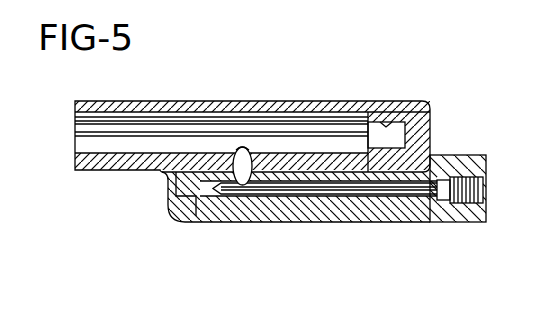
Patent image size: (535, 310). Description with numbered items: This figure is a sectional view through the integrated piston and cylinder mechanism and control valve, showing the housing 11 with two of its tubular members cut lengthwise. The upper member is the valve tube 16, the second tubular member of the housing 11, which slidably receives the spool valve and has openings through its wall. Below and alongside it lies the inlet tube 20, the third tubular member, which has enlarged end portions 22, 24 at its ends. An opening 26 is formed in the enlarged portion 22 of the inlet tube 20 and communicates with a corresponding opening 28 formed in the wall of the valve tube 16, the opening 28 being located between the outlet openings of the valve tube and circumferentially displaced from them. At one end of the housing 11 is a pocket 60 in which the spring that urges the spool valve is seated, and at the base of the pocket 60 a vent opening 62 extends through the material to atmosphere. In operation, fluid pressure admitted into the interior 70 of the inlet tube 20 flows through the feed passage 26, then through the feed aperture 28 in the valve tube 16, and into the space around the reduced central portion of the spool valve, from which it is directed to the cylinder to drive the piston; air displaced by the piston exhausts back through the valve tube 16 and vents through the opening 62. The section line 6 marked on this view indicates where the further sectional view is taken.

The section line 6— 6 is at (197, 56).
The housing 11 is at (356, 97).
The valve tube 16 is at (93, 157).
The inlet tube 20 is at (344, 208).
The enlarged end portion 22 is at (212, 222).
The enlarged end portion 24 is at (458, 216).
The opening 26 is at (243, 185).
The opening 28 is at (244, 147).
The pocket 60 is at (402, 103).
The vent opening 62 is at (422, 137).
The interior 70 is at (382, 193).